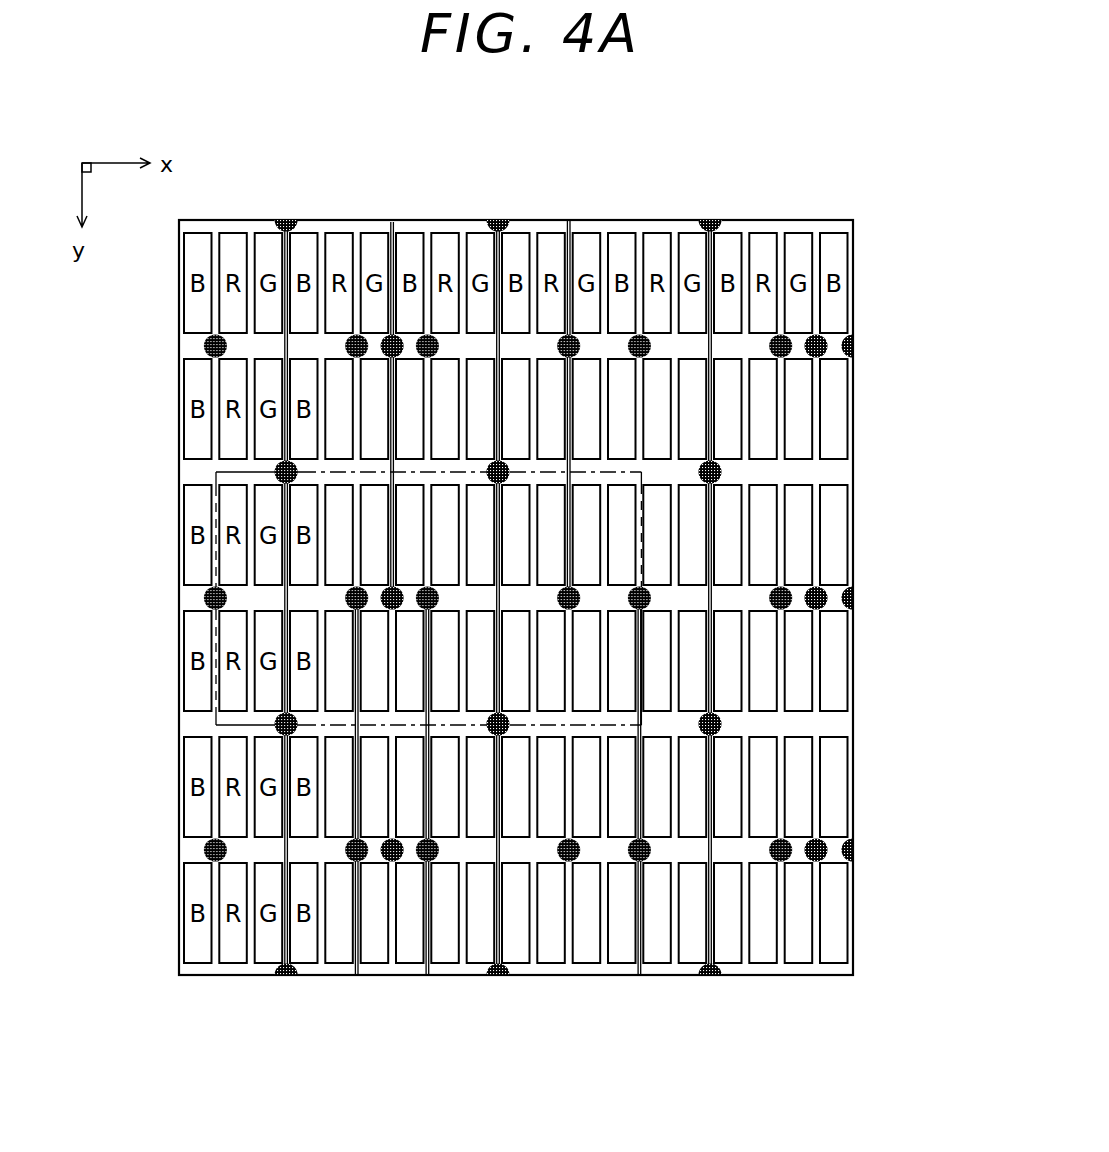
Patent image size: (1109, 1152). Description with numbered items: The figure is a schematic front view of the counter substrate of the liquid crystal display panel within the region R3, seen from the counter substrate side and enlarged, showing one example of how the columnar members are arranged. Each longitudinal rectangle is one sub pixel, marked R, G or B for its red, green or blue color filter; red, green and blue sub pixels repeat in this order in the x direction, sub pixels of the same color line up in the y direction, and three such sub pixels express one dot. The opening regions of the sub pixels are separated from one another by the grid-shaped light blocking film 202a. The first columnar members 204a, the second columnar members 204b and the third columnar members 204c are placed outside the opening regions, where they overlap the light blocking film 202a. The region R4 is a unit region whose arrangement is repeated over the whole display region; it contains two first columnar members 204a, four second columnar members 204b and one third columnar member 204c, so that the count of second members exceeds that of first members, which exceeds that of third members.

The first columnar members 204a is at (290, 220).
The second columnar members 204b is at (571, 220).
The third columnar members 204c is at (395, 222).
The light blocking film 202a is at (817, 475).
The region R3 is at (815, 206).
The region R4 is at (216, 466).